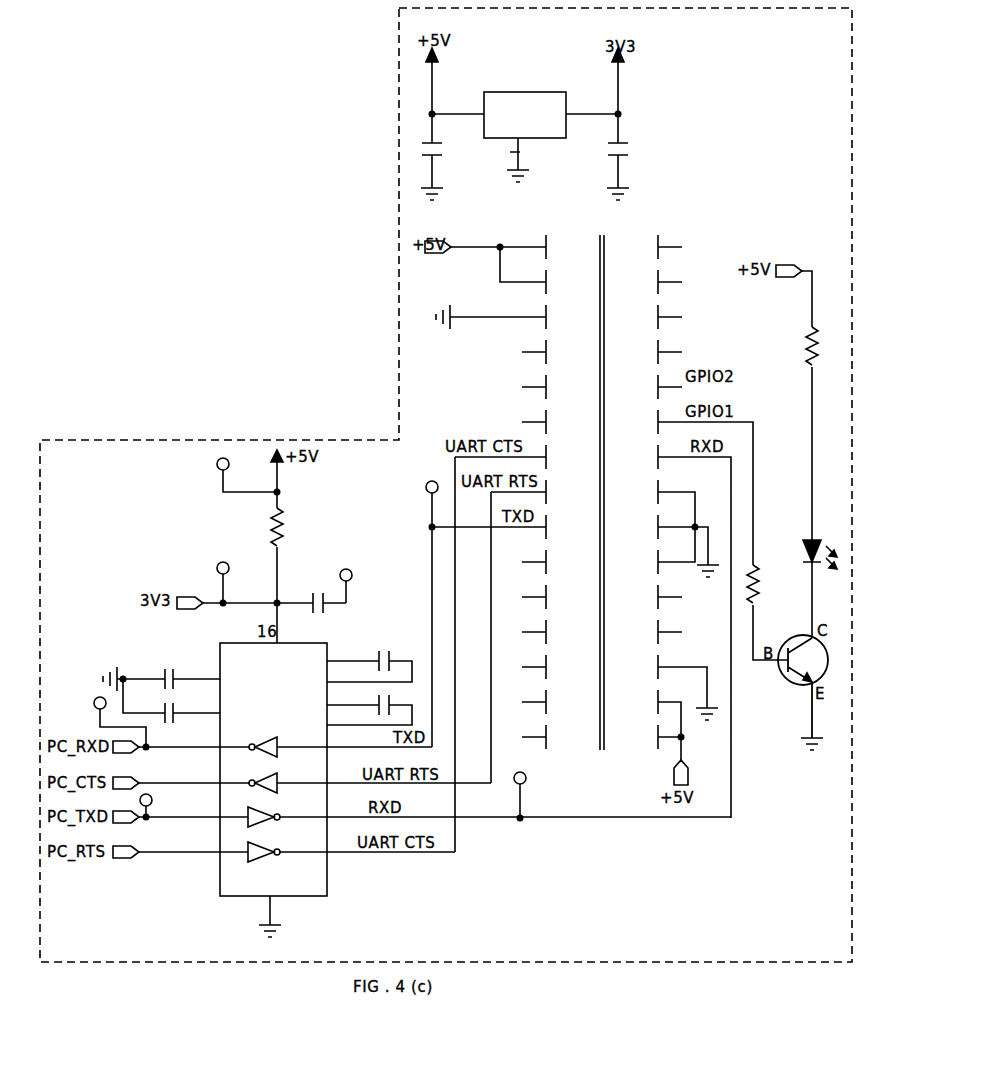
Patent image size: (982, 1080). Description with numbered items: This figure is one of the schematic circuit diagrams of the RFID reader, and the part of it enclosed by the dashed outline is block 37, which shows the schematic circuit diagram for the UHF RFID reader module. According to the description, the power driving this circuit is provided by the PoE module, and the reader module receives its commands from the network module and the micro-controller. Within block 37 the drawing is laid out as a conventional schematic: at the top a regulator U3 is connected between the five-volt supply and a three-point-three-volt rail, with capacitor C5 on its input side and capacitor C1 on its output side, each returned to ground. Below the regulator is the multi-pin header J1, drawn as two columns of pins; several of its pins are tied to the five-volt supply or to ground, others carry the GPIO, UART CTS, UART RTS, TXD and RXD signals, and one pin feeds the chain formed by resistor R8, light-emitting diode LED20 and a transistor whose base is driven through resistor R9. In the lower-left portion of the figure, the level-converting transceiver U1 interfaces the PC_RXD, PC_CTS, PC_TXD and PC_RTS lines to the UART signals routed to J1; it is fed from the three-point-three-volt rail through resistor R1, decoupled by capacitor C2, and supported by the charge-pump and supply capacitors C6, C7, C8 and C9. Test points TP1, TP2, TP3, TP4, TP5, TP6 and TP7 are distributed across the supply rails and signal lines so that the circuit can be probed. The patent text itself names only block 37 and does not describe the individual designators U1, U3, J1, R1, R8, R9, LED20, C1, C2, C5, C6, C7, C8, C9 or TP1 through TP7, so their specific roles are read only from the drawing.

The block for UHF RFID reader module 37 is at (397, 328).
The RS-232 transceiver U1 is at (271, 790).
The voltage regulator U3 is at (525, 126).
The connector J1 is at (602, 492).
The resistor R1 is at (269, 527).
The resistor R8 is at (803, 346).
The resistor R9 is at (767, 612).
The light emitting diode LED20 is at (812, 535).
The capacitor C1 is at (632, 163).
The capacitor C2 is at (327, 593).
The capacitor C5 is at (440, 163).
The capacitor C6 is at (155, 673).
The capacitor C7 is at (156, 708).
The capacitor C8 is at (400, 657).
The capacitor C9 is at (397, 702).
The test point TP1 is at (101, 721).
The test point TP2 is at (162, 804).
The test point TP3 is at (229, 472).
The test point TP4 is at (222, 570).
The test point TP5 is at (347, 574).
The test point TP6 is at (414, 484).
The test point TP7 is at (538, 796).